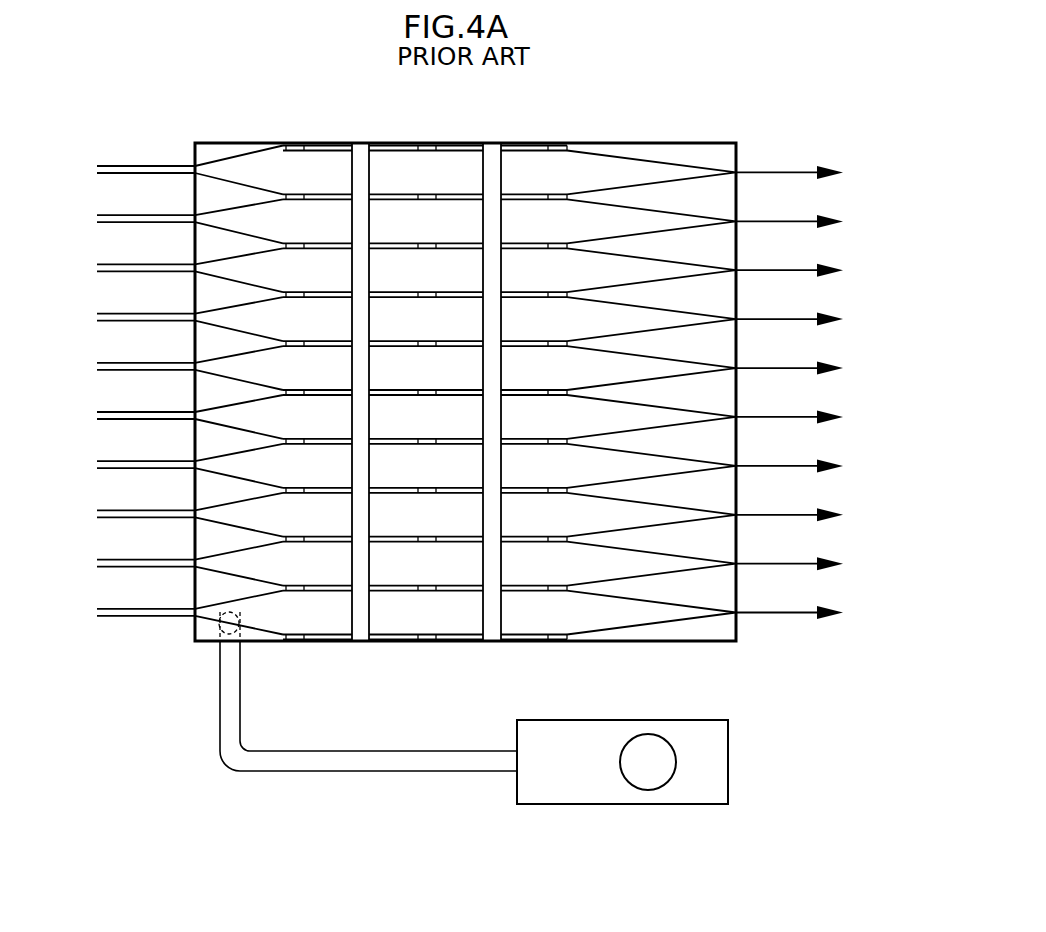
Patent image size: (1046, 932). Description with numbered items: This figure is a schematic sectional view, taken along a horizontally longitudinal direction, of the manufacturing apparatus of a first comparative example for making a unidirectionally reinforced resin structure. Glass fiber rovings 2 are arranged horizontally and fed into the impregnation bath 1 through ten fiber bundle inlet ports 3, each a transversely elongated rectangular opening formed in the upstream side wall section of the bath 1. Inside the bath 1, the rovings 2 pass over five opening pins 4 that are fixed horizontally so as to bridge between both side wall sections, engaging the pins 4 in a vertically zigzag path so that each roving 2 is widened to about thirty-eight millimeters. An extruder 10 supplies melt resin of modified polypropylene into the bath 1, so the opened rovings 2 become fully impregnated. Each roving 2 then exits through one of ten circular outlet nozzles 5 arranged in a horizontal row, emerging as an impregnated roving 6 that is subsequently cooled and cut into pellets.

The impregnation bath 1 is at (431, 357).
The roving 2 is at (130, 163).
The fiber bundle inlet port 3 is at (190, 160).
The opening pin 4 is at (356, 143).
The outlet nozzle 5 is at (740, 170).
The impregnated roving 6 is at (790, 172).
The extruder 10 is at (710, 733).